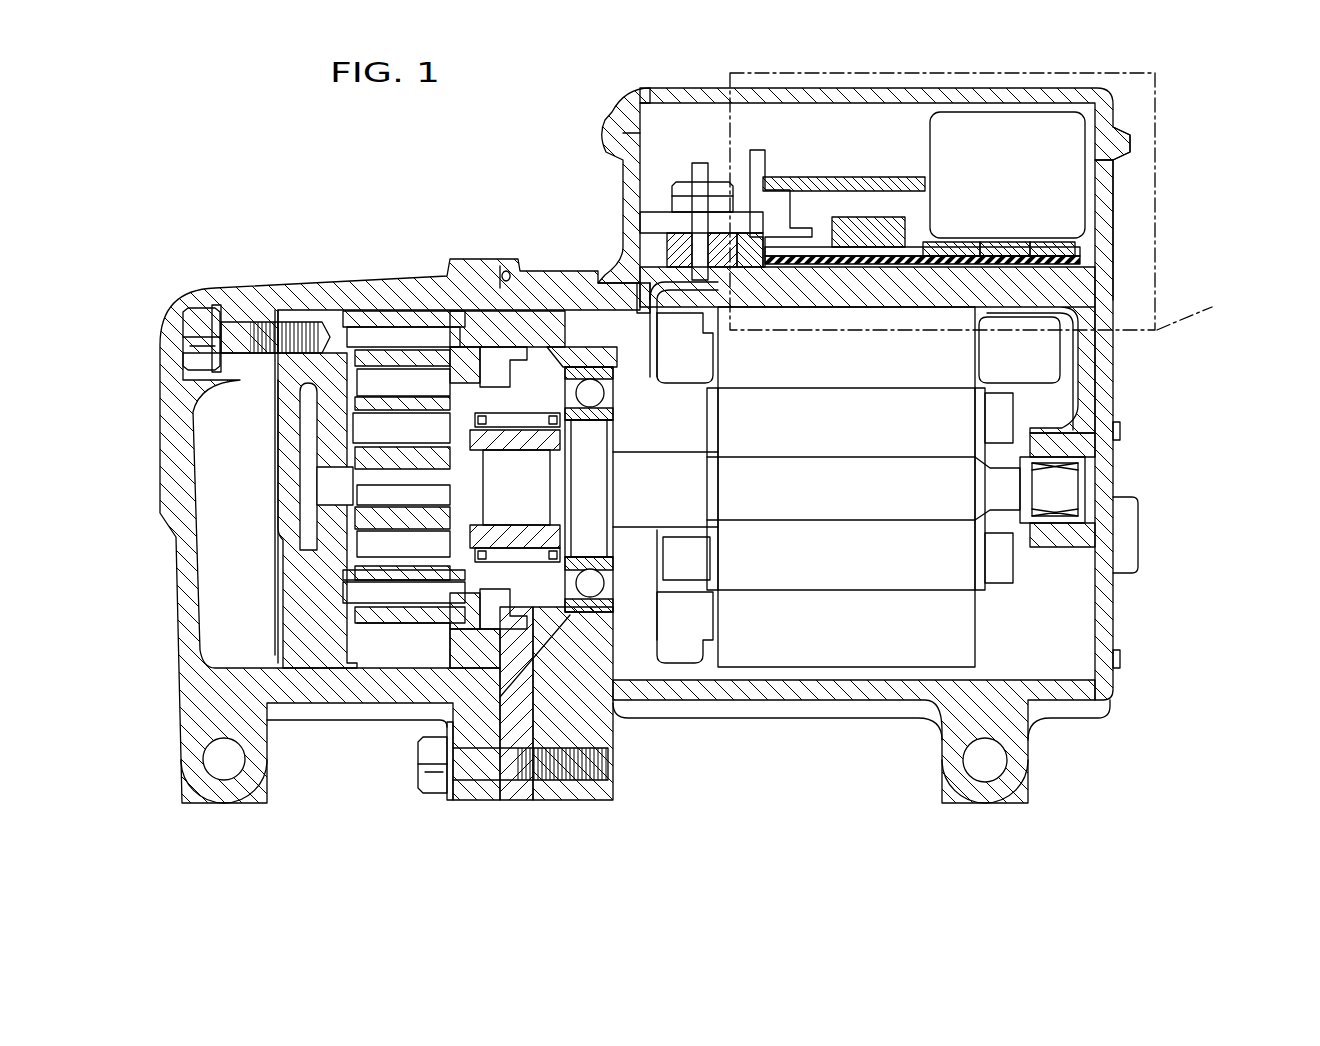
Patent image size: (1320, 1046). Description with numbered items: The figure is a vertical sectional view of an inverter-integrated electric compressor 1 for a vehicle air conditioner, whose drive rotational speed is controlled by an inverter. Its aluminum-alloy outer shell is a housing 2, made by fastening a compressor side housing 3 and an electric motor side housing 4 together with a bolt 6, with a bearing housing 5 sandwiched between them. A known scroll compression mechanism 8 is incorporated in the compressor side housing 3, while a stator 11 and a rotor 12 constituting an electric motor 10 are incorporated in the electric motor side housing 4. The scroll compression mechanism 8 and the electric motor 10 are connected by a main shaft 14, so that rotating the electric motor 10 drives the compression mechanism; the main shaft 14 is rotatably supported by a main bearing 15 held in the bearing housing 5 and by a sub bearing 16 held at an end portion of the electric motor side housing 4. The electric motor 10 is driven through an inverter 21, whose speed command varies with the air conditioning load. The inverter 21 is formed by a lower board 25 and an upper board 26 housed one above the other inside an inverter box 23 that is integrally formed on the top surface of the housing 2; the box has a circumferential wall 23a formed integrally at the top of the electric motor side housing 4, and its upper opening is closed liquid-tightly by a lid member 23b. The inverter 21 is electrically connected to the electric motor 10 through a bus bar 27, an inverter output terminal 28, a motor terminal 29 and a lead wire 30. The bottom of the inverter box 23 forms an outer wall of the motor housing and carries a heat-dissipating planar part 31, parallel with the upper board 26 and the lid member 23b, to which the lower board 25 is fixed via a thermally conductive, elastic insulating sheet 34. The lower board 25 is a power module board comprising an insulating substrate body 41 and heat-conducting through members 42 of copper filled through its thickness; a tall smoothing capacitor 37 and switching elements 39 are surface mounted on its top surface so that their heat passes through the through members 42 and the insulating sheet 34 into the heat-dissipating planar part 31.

The inverter-integrated electric compressor 1 is at (322, 168).
The housing 2 is at (590, 860).
The compressor side housing 3 is at (458, 802).
The electric motor side housing 4 is at (571, 802).
The bearing housing 5 is at (511, 802).
The bolt 6 is at (426, 758).
The scroll compression mechanism 8 is at (397, 298).
The electric motor 10 is at (1088, 362).
The stator 11 is at (800, 375).
The rotor 12 is at (958, 556).
The main shaft 14 is at (836, 505).
The main bearing 15 is at (596, 394).
The sub bearing 16 is at (1080, 456).
The inverter 21 is at (797, 148).
The inverter box 23 is at (1238, 93).
The circumferential wall 23a is at (1118, 183).
The lid member 23b is at (1118, 100).
The lower board 25 is at (1060, 178).
The upper board 26 is at (823, 178).
The bus bar 27 is at (757, 150).
The inverter output terminal 28 is at (660, 222).
The motor terminal 29 is at (677, 252).
The lead wire 30 is at (653, 330).
The heat-dissipating planar part 31 is at (945, 258).
The insulating sheet 34 is at (1024, 268).
The smoothing capacitor 37 is at (1022, 112).
The switching elements 39 is at (868, 217).
The substrate body 41 is at (976, 247).
The heat-conducting through member 42 is at (1028, 247).